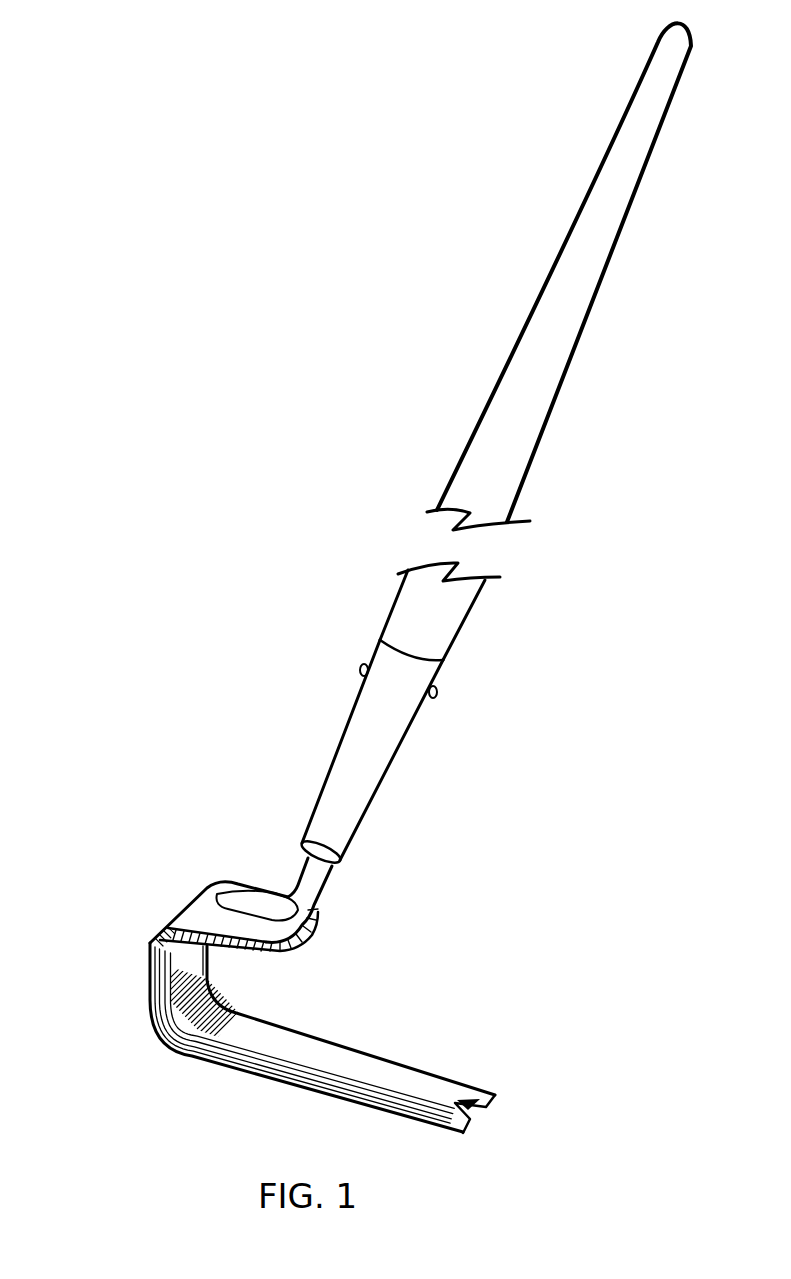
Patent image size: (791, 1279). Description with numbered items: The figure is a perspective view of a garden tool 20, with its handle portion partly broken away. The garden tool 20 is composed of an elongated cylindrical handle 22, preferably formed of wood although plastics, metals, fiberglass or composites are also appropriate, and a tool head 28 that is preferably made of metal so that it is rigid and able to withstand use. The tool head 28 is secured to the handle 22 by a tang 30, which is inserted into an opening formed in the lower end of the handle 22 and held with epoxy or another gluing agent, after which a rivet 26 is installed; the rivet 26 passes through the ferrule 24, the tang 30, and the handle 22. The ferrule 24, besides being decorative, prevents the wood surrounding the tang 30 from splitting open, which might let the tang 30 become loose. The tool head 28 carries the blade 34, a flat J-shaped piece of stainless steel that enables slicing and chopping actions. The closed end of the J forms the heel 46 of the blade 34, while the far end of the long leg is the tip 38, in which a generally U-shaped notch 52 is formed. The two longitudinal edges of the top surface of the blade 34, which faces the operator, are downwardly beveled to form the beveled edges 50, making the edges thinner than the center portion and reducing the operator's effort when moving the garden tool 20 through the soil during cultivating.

The garden tool 20 is at (242, 747).
The handle 22 is at (470, 628).
The ferrule 24 is at (405, 757).
The rivet 26 is at (362, 668).
The tool head 28 is at (197, 838).
The tang 30 is at (325, 893).
The blade 34 is at (398, 1017).
The tip 38 is at (500, 1097).
The heel 46 is at (113, 988).
The beveled edges 50 is at (302, 1087).
The U notch 52 is at (470, 1105).